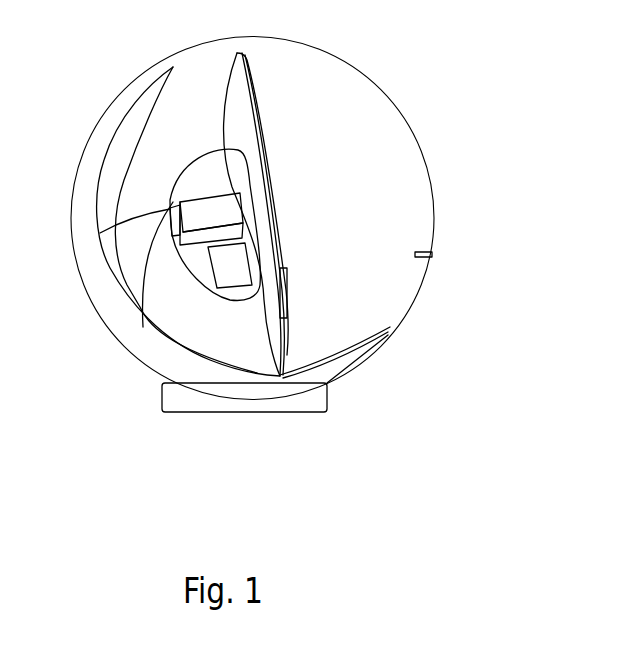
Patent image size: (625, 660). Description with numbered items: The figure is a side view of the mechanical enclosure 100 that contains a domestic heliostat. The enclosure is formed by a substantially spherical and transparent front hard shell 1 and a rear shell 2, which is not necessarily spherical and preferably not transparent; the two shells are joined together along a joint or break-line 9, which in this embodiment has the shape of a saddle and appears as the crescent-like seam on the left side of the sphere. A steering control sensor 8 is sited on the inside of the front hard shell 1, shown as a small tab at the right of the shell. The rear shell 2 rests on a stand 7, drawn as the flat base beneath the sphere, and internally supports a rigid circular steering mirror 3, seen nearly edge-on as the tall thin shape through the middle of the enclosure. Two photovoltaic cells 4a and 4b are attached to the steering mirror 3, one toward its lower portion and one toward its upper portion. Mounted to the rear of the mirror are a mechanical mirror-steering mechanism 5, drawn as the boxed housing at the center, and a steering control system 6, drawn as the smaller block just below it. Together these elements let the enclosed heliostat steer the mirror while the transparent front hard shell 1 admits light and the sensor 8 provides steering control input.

The mechanical enclosure 100 is at (380, 187).
The front hard shell 1 is at (432, 206).
The rear shell 2 is at (77, 245).
The steering mirror 3 is at (258, 182).
The photovoltaic cell 4a is at (288, 313).
The photovoltaic cell 4b is at (262, 110).
The mechanical mirror-steering mechanism 5 is at (220, 210).
The steering control system 6 is at (226, 288).
The stand 7 is at (270, 400).
The steering control sensor 8 is at (432, 257).
The joint or break-line 9 is at (96, 168).